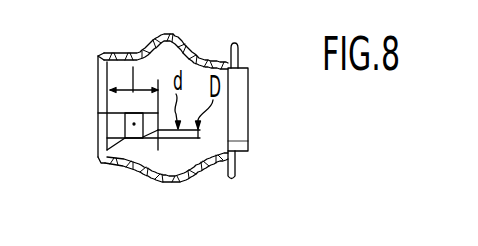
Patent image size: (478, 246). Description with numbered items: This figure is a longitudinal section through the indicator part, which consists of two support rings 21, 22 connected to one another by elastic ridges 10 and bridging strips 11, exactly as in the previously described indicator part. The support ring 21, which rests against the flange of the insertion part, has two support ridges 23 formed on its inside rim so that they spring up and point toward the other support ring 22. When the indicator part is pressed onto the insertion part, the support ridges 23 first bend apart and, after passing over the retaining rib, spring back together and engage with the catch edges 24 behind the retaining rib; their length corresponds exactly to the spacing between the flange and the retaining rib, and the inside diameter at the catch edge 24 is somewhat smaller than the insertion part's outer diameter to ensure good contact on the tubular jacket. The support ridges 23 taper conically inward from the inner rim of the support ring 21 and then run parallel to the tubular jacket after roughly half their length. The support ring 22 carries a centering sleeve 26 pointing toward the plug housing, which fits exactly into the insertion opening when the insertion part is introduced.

The elastic ridges 10 is at (132, 54).
The bridging strips 11 is at (153, 181).
The support ring 21 is at (98, 55).
The support ring 22 is at (240, 49).
The support ridges 23 is at (99, 125).
The catch edges 24 is at (160, 142).
The centering sleeve 26 is at (250, 156).